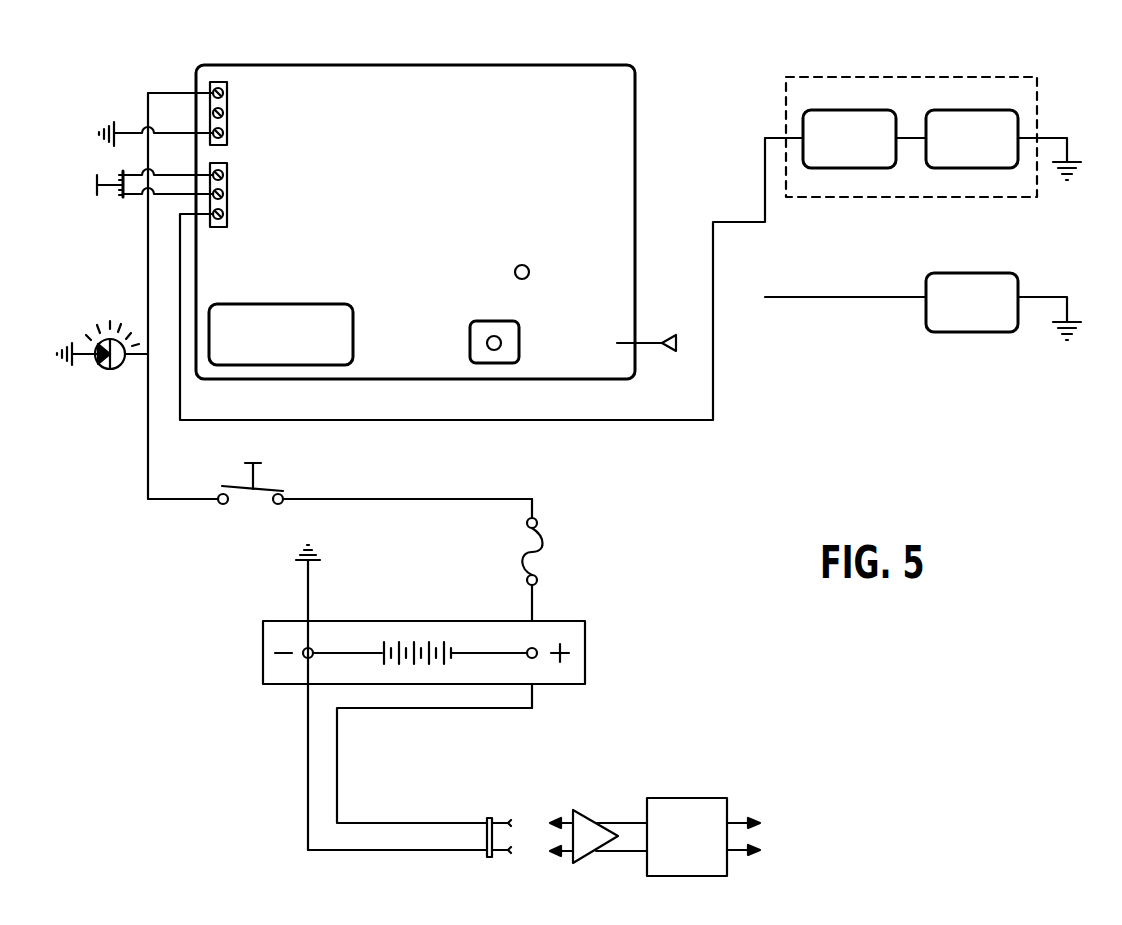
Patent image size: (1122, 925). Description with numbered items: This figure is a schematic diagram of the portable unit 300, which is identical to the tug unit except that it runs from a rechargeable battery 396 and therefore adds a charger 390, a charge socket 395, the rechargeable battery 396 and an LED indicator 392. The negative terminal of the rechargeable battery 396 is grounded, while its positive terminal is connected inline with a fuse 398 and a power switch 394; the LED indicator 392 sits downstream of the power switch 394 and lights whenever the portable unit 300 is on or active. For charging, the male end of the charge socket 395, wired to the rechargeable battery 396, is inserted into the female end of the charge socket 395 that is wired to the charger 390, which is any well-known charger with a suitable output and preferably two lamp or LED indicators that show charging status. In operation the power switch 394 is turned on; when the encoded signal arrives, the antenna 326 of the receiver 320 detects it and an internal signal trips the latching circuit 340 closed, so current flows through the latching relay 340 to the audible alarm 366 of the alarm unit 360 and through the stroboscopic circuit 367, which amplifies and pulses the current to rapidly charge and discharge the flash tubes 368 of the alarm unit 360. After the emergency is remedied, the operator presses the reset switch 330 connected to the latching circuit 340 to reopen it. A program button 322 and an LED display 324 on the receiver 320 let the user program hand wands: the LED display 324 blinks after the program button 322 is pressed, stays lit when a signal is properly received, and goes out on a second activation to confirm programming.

The portable unit 300 is at (662, 80).
The receiver 320 is at (407, 175).
The program button 322 is at (520, 340).
The LED display 324 is at (514, 269).
The antenna 326 is at (666, 336).
The reset switch 330 is at (121, 198).
The latching circuit 340 is at (353, 337).
The alarm unit 360 is at (933, 110).
The audible alarm 366 is at (957, 320).
The stroboscopic circuit 367 is at (835, 154).
The flash tubes 368 is at (957, 154).
The charger 390 is at (672, 798).
The LED indicator 392 is at (104, 370).
The power switch 394 is at (272, 490).
The charge socket 395 is at (598, 814).
The rechargeable battery 396 is at (592, 667).
The fuse 398 is at (537, 552).